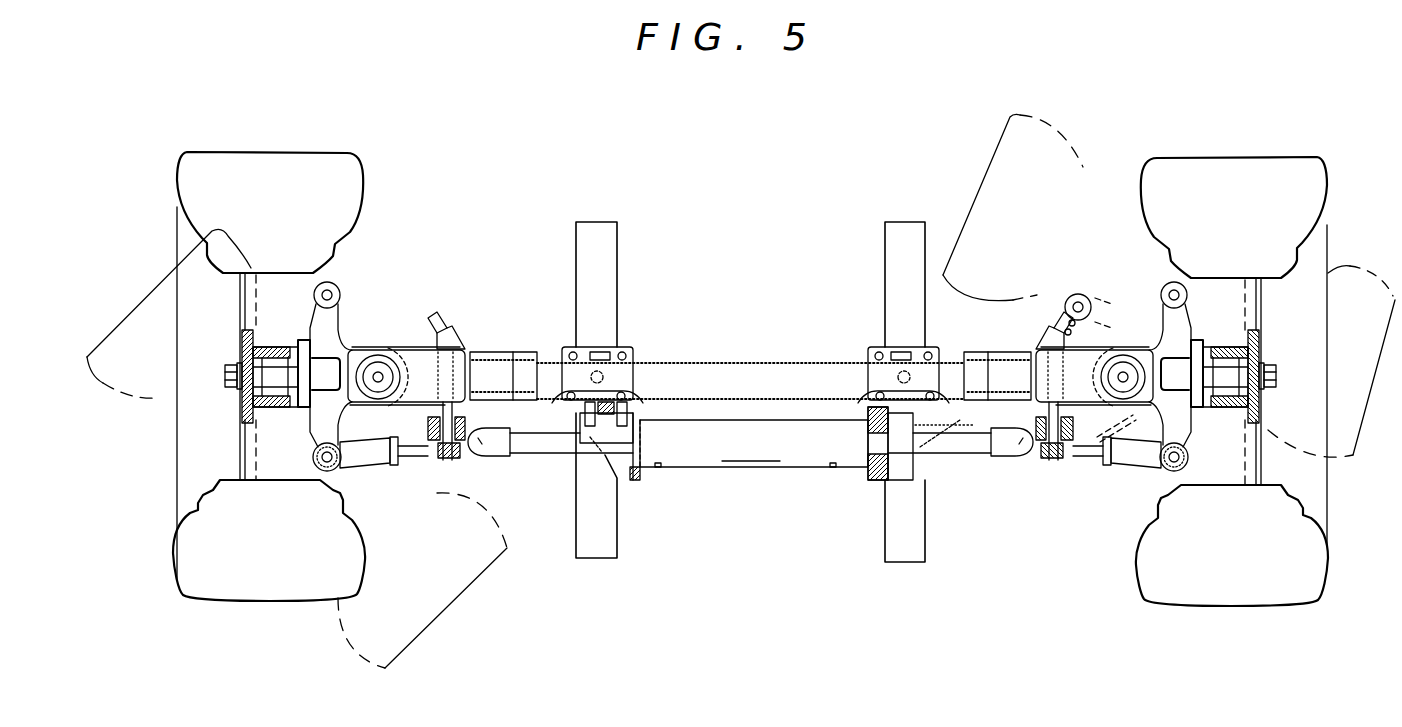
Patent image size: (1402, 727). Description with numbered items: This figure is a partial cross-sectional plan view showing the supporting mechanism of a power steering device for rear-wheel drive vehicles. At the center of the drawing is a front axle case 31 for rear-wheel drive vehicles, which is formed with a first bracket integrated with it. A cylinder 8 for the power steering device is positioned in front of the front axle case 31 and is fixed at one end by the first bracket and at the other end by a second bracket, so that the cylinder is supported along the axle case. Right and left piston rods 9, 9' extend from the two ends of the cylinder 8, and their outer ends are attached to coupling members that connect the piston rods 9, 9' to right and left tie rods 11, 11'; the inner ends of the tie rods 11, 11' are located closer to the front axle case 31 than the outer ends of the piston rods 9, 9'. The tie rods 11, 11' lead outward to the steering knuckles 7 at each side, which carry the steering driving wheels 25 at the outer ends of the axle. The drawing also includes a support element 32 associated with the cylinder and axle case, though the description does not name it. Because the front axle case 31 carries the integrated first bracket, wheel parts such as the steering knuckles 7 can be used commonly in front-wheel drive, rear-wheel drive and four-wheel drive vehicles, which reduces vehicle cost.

The steering driving wheel 25 is at (293, 180).
The steering knuckle 7 is at (340, 292).
The front axle case 31 is at (767, 363).
The cylinder 8 is at (768, 447).
The cylinder mounting bracket 32 is at (635, 473).
The piston rod 9 is at (550, 495).
The piston rod 9' is at (960, 483).
The tie rod 11 is at (426, 481).
The tie rod 11' is at (1072, 470).